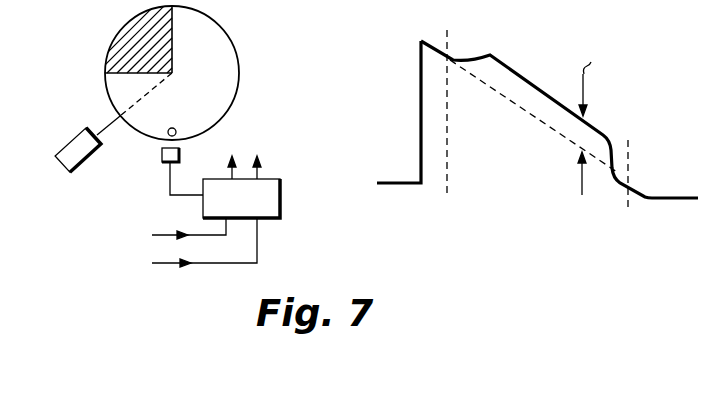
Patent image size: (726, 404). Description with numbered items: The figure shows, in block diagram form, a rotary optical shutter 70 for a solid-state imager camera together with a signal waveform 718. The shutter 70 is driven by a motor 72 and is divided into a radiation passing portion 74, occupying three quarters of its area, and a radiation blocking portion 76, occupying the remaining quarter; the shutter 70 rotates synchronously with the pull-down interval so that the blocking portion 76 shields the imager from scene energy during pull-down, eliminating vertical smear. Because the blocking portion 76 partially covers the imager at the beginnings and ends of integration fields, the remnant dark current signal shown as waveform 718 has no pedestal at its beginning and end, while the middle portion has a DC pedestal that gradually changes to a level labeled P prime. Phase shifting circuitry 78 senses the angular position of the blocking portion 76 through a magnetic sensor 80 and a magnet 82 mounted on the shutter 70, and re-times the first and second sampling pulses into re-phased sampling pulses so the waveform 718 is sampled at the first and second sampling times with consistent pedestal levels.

The rotary optical shutter 70 is at (101, 30).
The motor 72 is at (71, 138).
The radiation passing portion 74 is at (239, 64).
The radiation blocking portion 76 is at (107, 54).
The phase shifting circuitry 78 is at (282, 200).
The magnetic sensor 80 is at (162, 156).
The magnet 82 is at (175, 128).
The waveform 718 is at (500, 57).